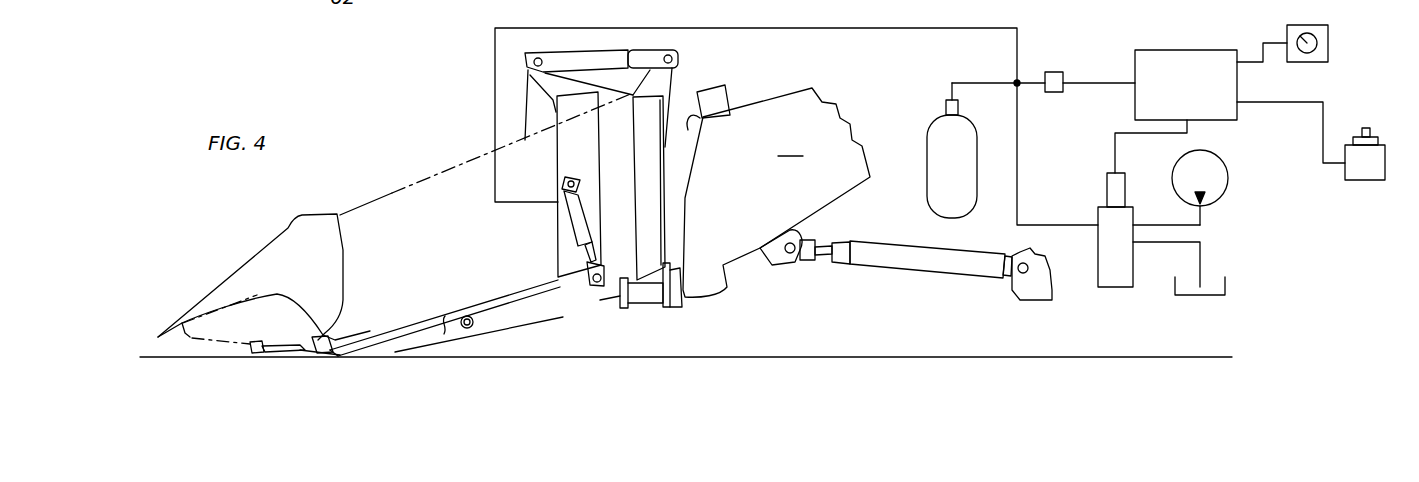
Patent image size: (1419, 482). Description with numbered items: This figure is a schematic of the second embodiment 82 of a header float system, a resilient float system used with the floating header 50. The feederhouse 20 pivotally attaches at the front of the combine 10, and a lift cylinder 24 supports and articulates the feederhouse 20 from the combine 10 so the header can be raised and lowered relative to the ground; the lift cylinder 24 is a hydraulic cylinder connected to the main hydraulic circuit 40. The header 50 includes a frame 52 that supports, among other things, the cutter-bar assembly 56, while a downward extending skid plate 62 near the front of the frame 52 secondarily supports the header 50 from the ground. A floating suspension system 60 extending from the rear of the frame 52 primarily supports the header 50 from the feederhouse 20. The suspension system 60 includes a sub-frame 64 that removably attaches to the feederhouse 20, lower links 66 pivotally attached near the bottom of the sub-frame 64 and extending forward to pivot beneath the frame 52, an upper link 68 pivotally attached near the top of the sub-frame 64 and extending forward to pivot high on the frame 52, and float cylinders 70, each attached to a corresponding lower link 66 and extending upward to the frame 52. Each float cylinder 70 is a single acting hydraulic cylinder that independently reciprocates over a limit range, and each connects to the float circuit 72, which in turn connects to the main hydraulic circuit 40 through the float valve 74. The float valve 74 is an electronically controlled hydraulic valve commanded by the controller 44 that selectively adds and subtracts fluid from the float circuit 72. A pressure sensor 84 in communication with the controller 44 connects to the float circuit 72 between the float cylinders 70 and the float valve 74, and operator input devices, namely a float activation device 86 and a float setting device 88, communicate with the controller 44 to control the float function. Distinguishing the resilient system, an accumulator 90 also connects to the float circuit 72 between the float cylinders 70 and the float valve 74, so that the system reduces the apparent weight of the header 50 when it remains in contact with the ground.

The combine 10 is at (1027, 292).
The feederhouse 20 is at (776, 191).
The lift cylinders 24 is at (918, 266).
The main hydraulic circuit 40 is at (1154, 252).
The controller 44 is at (1172, 48).
The floating header 50 is at (440, 155).
The frame 52 is at (419, 345).
The cutter-bar assembly 56 is at (283, 358).
The floating suspension system 60 is at (634, 318).
The skid plate 62 is at (332, 360).
The sub-frame 64 is at (645, 165).
The lower links 66 is at (543, 312).
The upper link 68 is at (617, 62).
The float cylinders 70 is at (560, 220).
The float circuit 72 is at (975, 22).
The float valve 74 is at (1090, 240).
The second embodiment (resilient float system) 82 is at (423, 76).
The pressure sensor 84 is at (1054, 93).
The float activation device 86 is at (1357, 181).
The float setting device 88 is at (1328, 43).
The accumulator 90 is at (926, 140).